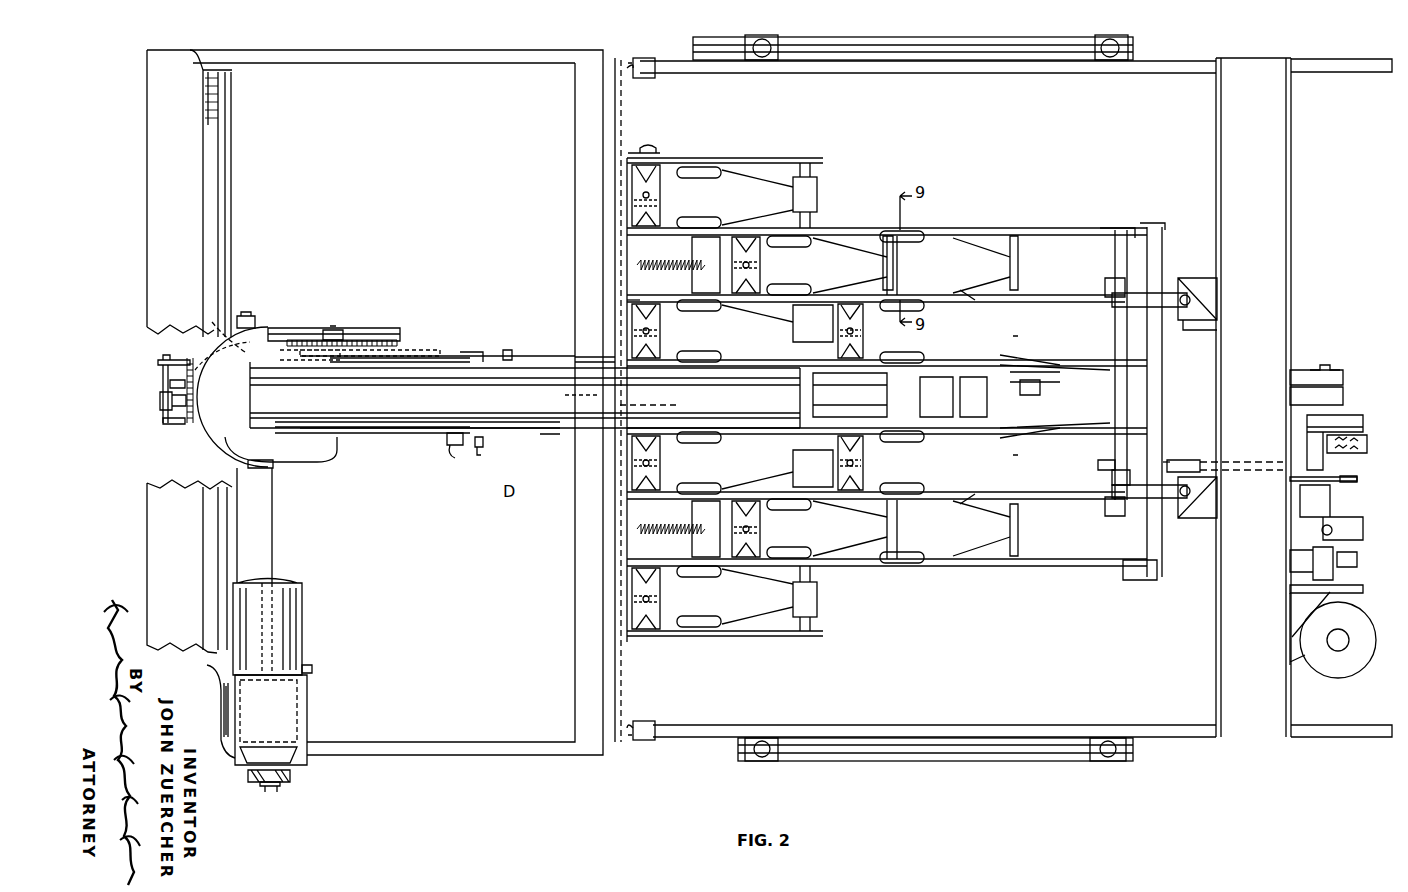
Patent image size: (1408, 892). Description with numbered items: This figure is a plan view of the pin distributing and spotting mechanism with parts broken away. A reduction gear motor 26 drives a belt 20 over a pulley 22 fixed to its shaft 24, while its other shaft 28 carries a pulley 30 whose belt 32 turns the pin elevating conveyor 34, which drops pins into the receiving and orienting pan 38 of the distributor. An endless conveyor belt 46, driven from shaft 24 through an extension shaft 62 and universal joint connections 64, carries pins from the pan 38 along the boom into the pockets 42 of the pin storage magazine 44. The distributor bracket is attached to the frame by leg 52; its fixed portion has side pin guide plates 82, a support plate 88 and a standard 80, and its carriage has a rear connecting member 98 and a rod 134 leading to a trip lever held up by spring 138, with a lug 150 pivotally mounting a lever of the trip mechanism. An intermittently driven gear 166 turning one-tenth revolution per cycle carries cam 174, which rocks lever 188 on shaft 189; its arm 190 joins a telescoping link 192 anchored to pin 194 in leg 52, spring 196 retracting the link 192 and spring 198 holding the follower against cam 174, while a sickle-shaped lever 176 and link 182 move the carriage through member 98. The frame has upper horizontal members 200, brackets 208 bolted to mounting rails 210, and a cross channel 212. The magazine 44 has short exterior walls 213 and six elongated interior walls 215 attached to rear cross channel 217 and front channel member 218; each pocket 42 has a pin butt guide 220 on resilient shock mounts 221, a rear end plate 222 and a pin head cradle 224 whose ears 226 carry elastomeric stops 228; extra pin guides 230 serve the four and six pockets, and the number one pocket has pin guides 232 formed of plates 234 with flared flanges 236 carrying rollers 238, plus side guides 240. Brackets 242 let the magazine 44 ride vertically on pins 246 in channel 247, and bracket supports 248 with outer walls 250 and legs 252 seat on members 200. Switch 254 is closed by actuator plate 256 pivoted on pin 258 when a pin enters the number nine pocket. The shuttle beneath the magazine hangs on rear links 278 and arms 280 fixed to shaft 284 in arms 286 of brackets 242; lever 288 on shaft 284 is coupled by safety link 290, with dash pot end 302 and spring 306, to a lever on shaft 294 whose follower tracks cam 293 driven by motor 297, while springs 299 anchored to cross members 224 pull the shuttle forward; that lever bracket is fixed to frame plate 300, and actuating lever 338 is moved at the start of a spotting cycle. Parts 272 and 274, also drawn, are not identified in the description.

The driving belt 20 is at (290, 776).
The pulley 22 is at (280, 785).
The shaft 24 is at (271, 792).
The reduction gear motor 26 is at (302, 650).
The shaft 28 is at (242, 710).
The pulley 30 is at (220, 670).
The belt 32 is at (228, 222).
The pin elevating conveyor 34 is at (222, 175).
The receiving and orienting member or pan 38 is at (210, 438).
The pin receiving compartments or pockets 42 is at (962, 302).
The pin storage magazine 44 is at (952, 210).
The endless conveyor belt 46 is at (405, 405).
The leg 52 is at (160, 402).
The extension shaft 62 is at (272, 518).
The universal joint connections 64 is at (275, 458).
The standard 80 is at (528, 478).
The side pin guide plates 82 is at (440, 428).
The support plate 88 is at (345, 432).
The rear carriage connecting member 98 is at (465, 440).
The elongated rod 134 is at (560, 355).
The spring 138 is at (483, 446).
The lug 150 is at (525, 340).
The intermittently driven gear 166 is at (397, 343).
The cam 174 is at (400, 338).
The sickle-shaped lever 176 is at (440, 337).
The link 182 is at (470, 355).
The lever 188 is at (343, 335).
The shaft 189 is at (252, 316).
The arm 190 is at (212, 322).
The telescoping or extensible link 192 is at (198, 358).
The pin 194 is at (158, 362).
The spring 196 is at (170, 384).
The spring 198 is at (168, 424).
The upper horizontal member 200 is at (1158, 72).
The brackets 208 is at (762, 60).
The mounting rails 210 is at (898, 60).
The cross channel 212 is at (1218, 681).
The exterior side walls 213 is at (820, 158).
The interior walls 215 is at (1020, 228).
The cross channel 217 is at (627, 683).
The front channel member 218 is at (1160, 563).
The pin butt guide 220 is at (817, 185).
The resilient shock mount connections 221 is at (820, 225).
The rear end plate 222 is at (812, 285).
The pin head cradle or downwardly curved cross member 224 is at (660, 200).
The inwardly turned ears 226 is at (655, 170).
The elastomeric stops 228 is at (652, 183).
The pin guide 230 is at (800, 247).
The pin guides 232 is at (1056, 390).
The elongated plates 234 is at (1020, 370).
The outwardly flared flanges 236 is at (1030, 345).
The non-friction ball bearing rollers 238 is at (1043, 393).
The upwardly extending side guides 240 is at (1018, 338).
The brackets 242 is at (1175, 274).
The pins 246 is at (1190, 300).
The channel 247 is at (1205, 322).
The bracket support 248 is at (665, 94).
The outer walls 250 is at (644, 58).
The legs 252 is at (638, 80).
The normally open switch 254 is at (525, 395).
The switch actuator plate 256 is at (620, 333).
The pin 258 is at (583, 404).
The rail 272 is at (1000, 298).
The rail 274 is at (775, 343).
The rear links 278 is at (655, 147).
The arms 280 is at (1110, 278).
The shaft 284 is at (1115, 322).
The arms 286 is at (1112, 478).
The lever 288 is at (1098, 465).
The link 290 is at (1175, 450).
The cam 293 is at (1350, 483).
The shaft 294 is at (1330, 455).
The motor 297 is at (1345, 670).
The springs 299 is at (675, 527).
The frame plate 300 is at (1290, 418).
The dash pot end portion 302 is at (1240, 462).
The spring 306 is at (1180, 460).
The actuating lever 338 is at (1378, 400).